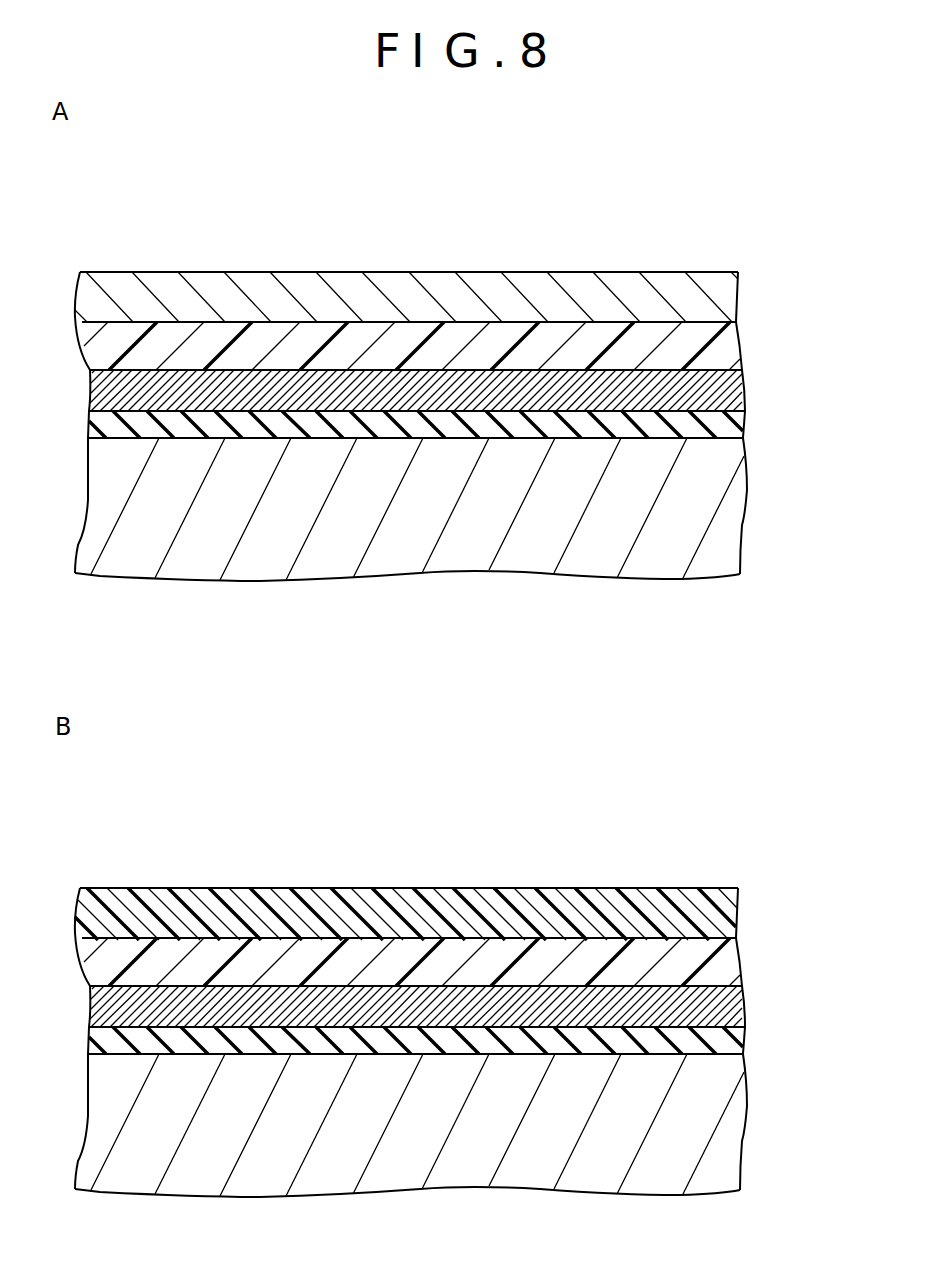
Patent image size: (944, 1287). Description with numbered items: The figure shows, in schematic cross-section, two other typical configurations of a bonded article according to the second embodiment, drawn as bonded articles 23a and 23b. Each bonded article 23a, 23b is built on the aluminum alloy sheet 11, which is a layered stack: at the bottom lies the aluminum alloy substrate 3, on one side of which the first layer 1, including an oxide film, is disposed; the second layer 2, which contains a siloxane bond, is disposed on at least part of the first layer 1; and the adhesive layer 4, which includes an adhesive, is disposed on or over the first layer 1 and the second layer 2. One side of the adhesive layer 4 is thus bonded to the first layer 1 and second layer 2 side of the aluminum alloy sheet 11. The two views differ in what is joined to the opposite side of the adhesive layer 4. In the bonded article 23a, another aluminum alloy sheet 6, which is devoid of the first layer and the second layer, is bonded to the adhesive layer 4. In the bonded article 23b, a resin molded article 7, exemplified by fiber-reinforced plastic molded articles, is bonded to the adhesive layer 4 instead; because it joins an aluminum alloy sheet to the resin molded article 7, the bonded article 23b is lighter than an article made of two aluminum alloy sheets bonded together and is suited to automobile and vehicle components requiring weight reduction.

In FIG. 8A, the bonded article 23a is at (476, 358).
In FIG. 8B, the bonded article 23b is at (476, 974).
In FIG. 8A, the other aluminum alloy sheet 6 is at (718, 293).
In FIG. 8B, the resin molded article 7 is at (718, 909).
In FIG. 8A, the adhesive layer 4 is at (718, 345).
In FIG. 8B, the adhesive layer 4 is at (446, 962).
In FIG. 8A, the second layer 2 is at (718, 387).
In FIG. 8B, the second layer 2 is at (449, 1006).
In FIG. 8A, the first layer 1 is at (718, 423).
In FIG. 8B, the first layer 1 is at (448, 1040).
In FIG. 8A, the aluminum alloy substrate 3 is at (722, 467).
In FIG. 8B, the aluminum alloy substrate 3 is at (449, 1125).
In FIG. 8A, the aluminum alloy sheet 11 is at (822, 330).
In FIG. 8B, the aluminum alloy sheet 11 is at (476, 1042).